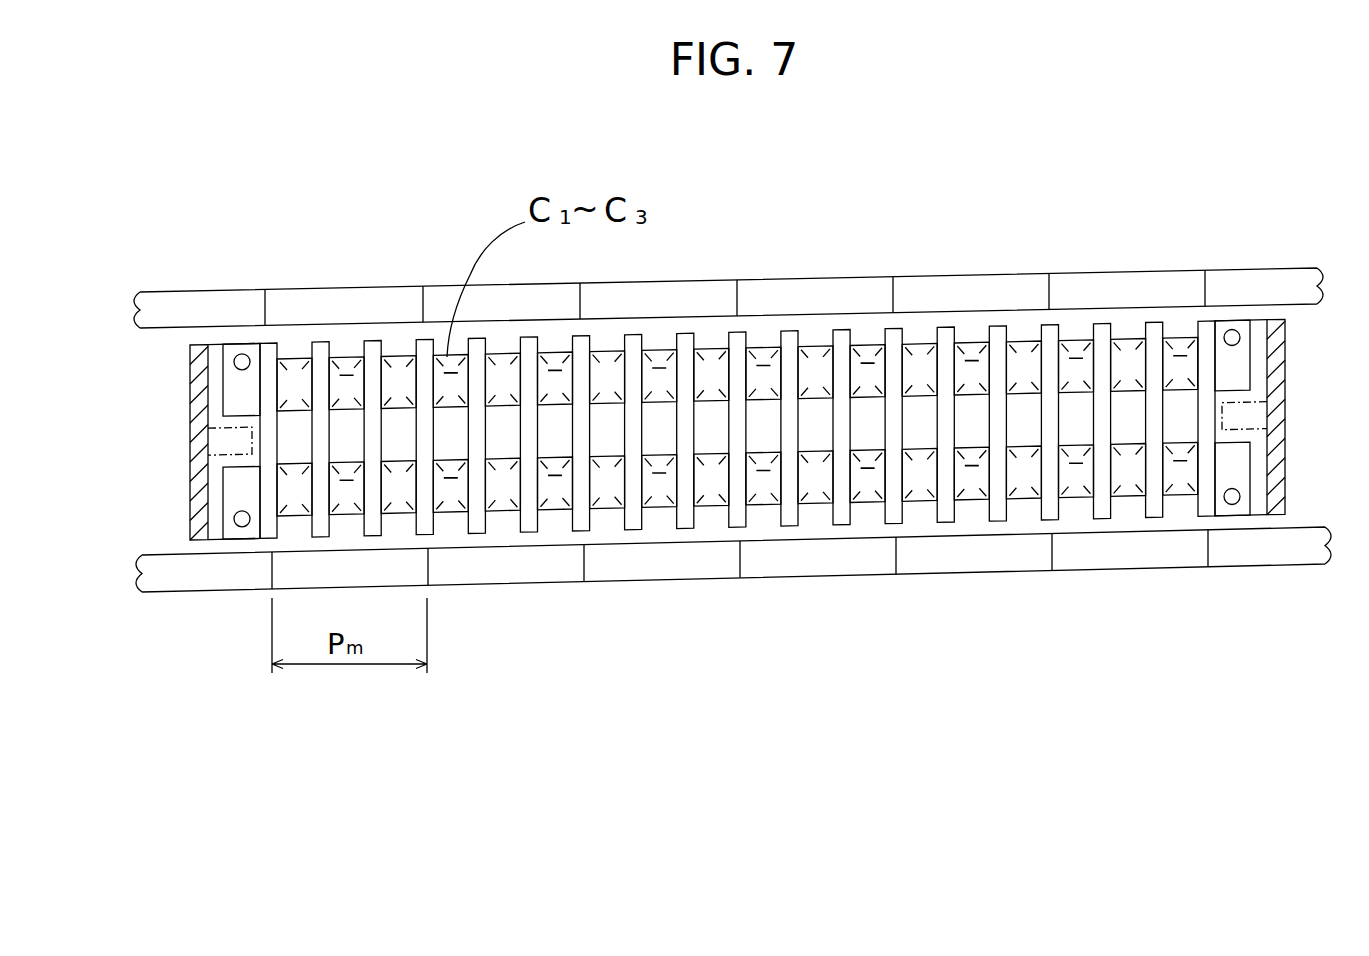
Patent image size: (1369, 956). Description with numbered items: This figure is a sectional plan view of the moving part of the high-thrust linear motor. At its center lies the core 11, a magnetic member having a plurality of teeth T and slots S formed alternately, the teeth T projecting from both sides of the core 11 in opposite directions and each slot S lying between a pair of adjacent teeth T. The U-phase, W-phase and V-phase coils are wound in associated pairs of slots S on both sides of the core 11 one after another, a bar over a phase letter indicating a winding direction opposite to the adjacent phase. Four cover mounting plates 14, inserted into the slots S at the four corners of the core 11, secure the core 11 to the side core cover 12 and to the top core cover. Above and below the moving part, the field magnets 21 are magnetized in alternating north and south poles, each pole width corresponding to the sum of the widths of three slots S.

The core 11 is at (675, 365).
The side core cover 12 is at (195, 480).
The cover mounting plate 14 is at (238, 388).
The field magnet 21 is at (288, 308).
The tooth T is at (318, 345).
The slot S is at (348, 340).